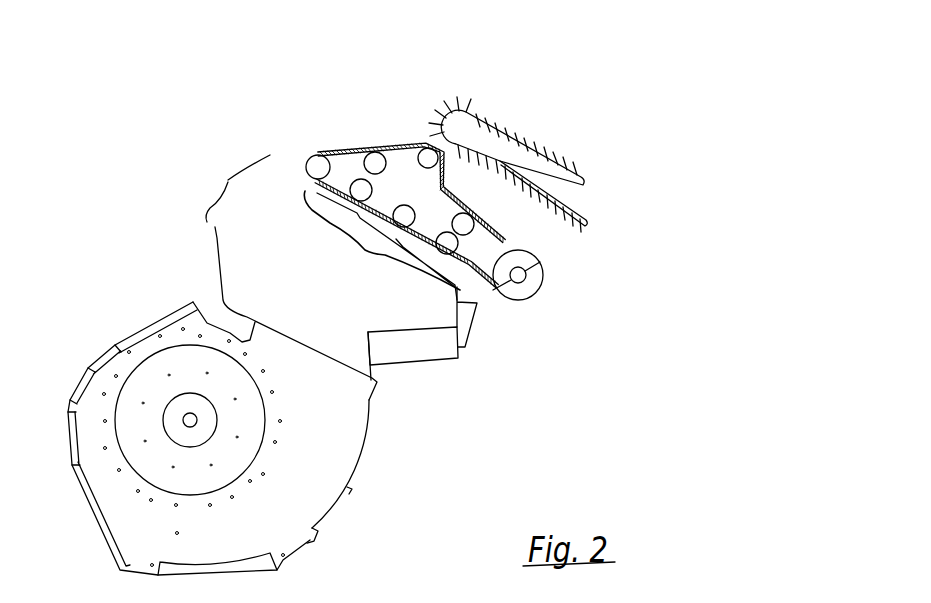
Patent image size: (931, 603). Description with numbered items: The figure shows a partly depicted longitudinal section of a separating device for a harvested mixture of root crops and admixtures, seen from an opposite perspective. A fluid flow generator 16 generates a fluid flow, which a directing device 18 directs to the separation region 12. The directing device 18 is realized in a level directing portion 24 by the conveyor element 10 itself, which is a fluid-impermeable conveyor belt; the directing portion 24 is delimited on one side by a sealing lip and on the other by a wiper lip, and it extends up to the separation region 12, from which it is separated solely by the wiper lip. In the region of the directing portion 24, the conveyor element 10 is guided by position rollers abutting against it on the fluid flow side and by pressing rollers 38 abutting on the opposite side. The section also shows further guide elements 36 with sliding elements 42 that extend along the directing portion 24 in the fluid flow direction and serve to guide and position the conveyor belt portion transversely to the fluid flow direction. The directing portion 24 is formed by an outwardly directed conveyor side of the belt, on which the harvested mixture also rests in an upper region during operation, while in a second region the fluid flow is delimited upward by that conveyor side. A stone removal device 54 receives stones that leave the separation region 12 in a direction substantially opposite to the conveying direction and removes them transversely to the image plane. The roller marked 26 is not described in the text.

The conveyor element 10 is at (387, 147).
The separation region 12 is at (226, 176).
The fluid flow generator 16 is at (148, 462).
The directing device 18 is at (213, 268).
The directing portion 24 is at (368, 253).
The drive roller 26 is at (512, 238).
The guide elements 36 is at (369, 144).
The pressing rollers 38 is at (365, 187).
The sliding elements 42 is at (322, 183).
The stone removal device 54 is at (395, 357).